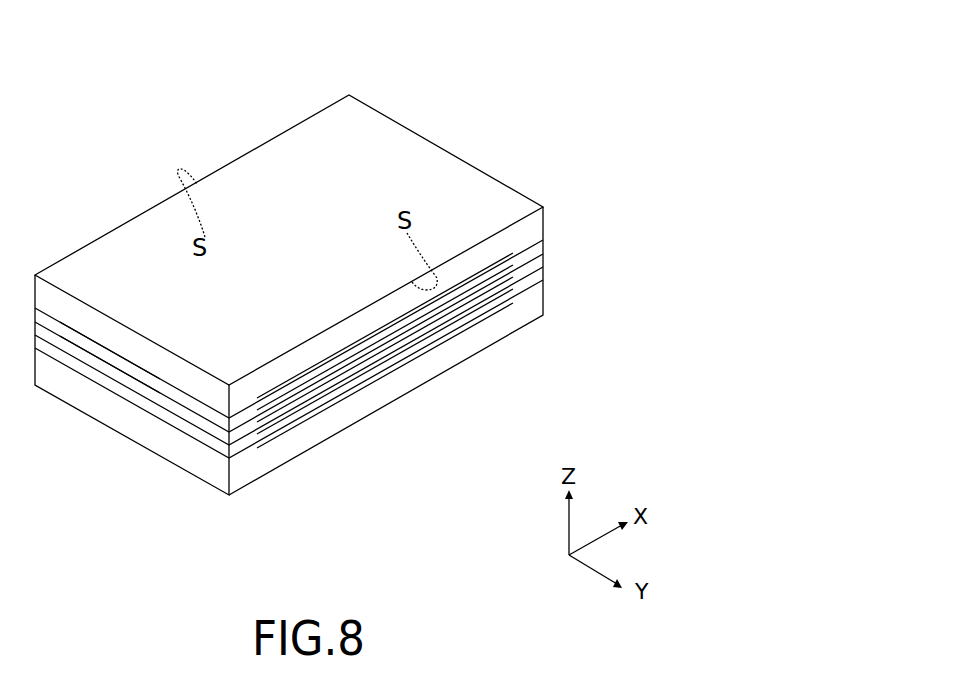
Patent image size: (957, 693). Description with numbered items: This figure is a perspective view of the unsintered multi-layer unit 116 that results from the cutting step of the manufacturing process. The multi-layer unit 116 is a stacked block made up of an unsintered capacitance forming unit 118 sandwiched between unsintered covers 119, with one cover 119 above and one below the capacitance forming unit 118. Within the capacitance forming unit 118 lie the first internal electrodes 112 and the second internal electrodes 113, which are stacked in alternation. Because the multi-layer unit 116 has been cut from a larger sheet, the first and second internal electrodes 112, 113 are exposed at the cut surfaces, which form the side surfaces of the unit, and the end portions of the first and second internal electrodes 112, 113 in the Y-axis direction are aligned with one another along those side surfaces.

The multi-layer unit 116 is at (456, 116).
The cover 119 is at (549, 310).
The capacitance forming unit 118 is at (549, 258).
The second internal electrode 113 is at (513, 262).
The first internal electrode 112 is at (120, 356).